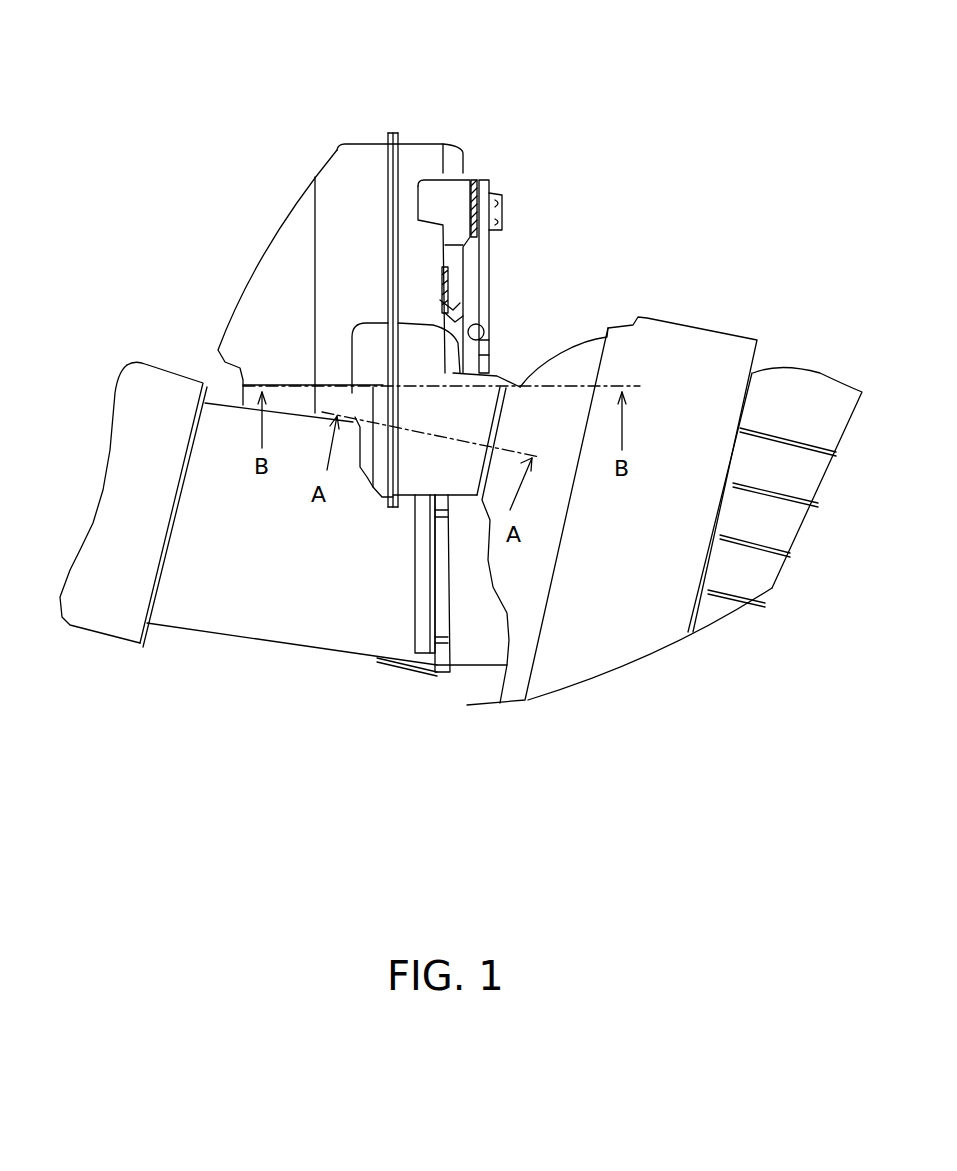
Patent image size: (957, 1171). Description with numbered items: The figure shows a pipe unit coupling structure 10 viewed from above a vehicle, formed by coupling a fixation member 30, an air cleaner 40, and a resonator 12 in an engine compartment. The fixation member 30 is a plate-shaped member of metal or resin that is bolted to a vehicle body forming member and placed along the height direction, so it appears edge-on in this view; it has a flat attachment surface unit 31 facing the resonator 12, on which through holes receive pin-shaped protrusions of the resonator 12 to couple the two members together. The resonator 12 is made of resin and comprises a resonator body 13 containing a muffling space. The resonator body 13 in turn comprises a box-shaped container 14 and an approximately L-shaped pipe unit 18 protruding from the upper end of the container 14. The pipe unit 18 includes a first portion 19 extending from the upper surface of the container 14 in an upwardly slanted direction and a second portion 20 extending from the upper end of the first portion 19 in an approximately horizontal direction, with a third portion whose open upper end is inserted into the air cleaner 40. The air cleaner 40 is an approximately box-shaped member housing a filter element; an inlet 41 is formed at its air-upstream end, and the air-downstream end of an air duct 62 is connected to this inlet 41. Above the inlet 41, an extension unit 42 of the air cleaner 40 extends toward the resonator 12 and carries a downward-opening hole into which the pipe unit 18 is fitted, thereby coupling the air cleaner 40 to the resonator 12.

The pipe unit coupling structure 10 is at (630, 72).
The resonator 12 is at (358, 138).
The resonator body 13 is at (343, 193).
The container 14 is at (417, 143).
The pipe unit 18 is at (370, 340).
The first portion 19 is at (410, 340).
The second portion 20 is at (418, 467).
The fixation member 30 is at (500, 275).
The attachment surface unit 31 is at (490, 340).
The air cleaner 40 is at (697, 323).
The inlet 41 is at (470, 650).
The extension unit 42 is at (532, 577).
The air duct 62 is at (237, 640).